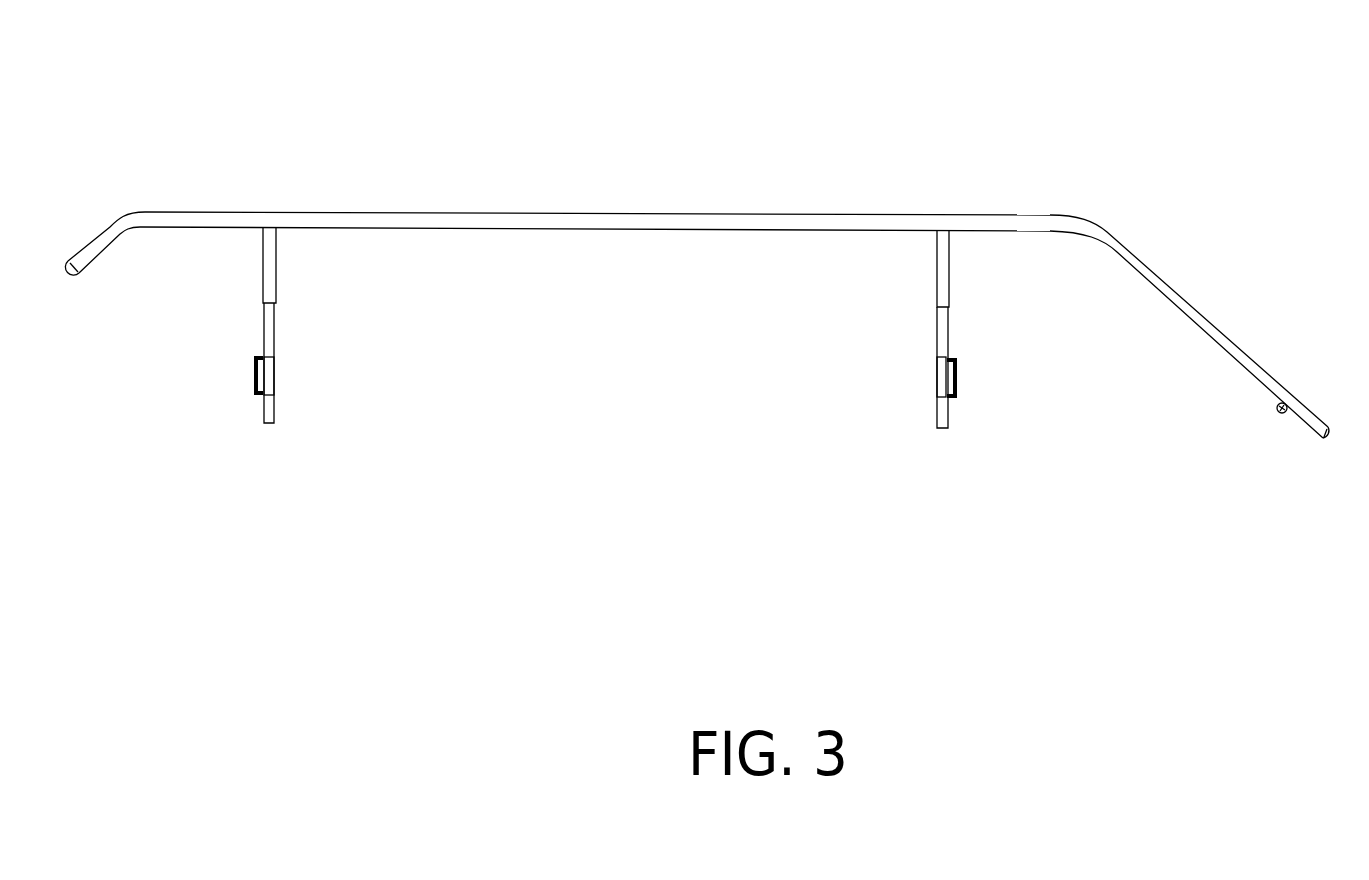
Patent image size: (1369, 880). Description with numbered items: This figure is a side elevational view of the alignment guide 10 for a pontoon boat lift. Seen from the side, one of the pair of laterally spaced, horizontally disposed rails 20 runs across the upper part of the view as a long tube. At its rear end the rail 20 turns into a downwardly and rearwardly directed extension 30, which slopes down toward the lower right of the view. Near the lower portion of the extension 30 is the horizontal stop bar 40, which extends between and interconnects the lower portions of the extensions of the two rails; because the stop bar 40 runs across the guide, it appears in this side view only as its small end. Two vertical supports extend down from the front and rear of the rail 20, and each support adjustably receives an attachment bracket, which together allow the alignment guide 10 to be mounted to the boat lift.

The alignment guide 10 is at (697, 274).
The rail 20 is at (563, 223).
The extension 30 is at (1190, 307).
The horizontal stop bar 40 is at (1285, 415).